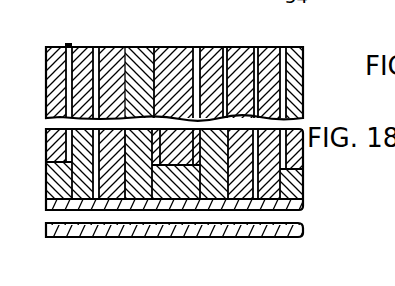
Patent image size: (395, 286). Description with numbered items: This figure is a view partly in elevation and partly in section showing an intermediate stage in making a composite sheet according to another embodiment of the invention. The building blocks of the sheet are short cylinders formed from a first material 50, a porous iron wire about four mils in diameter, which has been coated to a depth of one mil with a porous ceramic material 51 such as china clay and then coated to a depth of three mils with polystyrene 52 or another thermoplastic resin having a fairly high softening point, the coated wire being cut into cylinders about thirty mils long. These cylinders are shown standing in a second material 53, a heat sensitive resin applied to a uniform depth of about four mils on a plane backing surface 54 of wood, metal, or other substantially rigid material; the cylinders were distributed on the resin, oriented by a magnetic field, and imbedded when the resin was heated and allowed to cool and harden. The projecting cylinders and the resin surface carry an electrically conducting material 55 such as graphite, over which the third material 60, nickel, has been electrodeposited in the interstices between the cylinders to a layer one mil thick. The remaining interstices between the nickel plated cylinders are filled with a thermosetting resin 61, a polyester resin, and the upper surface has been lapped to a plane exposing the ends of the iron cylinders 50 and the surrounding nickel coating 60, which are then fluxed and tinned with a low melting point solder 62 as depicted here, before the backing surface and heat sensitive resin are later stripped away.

The first material 50 is at (110, 60).
The porous ceramic material 51 is at (93, 48).
The polystyrene 52 is at (213, 50).
The second material 53 is at (285, 184).
The backing surface 54 is at (272, 234).
The electrically conducting material 55 is at (152, 48).
The third material 60 is at (188, 64).
The thermosetting resin 61 is at (47, 88).
The low melting point solder 62 is at (313, 82).